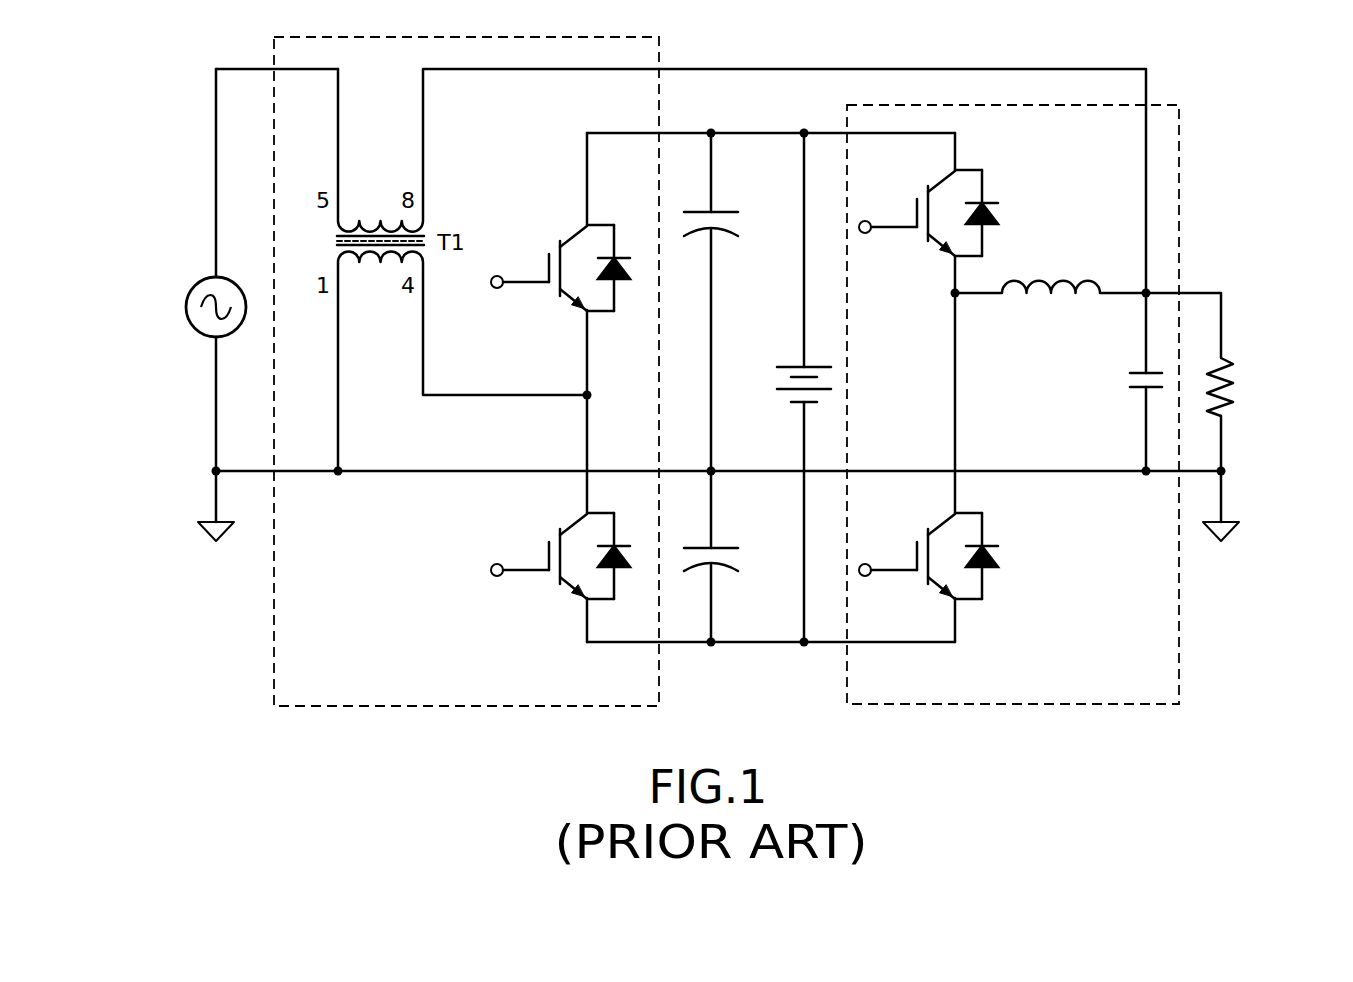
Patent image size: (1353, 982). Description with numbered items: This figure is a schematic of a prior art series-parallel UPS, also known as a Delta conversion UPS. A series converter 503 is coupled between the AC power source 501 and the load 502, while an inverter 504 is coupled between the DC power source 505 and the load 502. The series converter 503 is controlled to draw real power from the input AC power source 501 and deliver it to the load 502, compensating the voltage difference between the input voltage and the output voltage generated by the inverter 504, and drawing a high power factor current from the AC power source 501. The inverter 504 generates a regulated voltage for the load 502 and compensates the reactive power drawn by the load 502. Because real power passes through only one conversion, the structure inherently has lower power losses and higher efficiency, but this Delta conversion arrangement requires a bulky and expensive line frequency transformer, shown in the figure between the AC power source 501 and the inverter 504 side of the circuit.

The AC power source 501 is at (186, 313).
The load 502 is at (1236, 390).
The series converter 503 is at (272, 659).
The inverter 504 is at (1181, 645).
The DC power source 505 is at (772, 380).